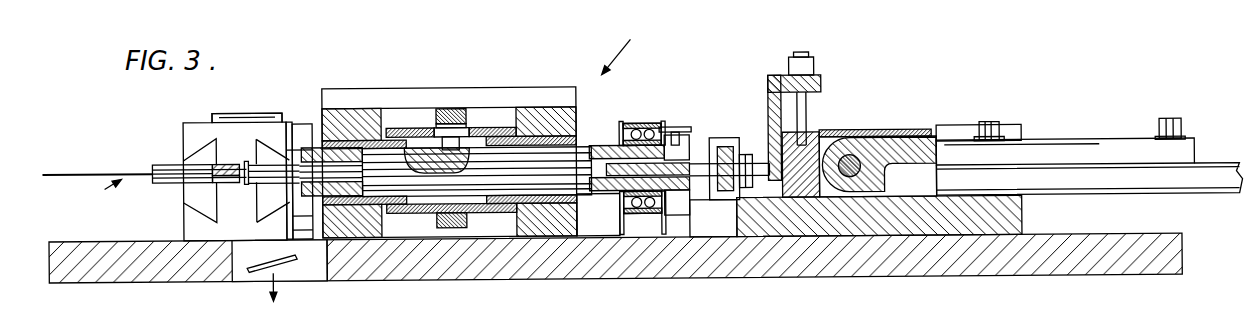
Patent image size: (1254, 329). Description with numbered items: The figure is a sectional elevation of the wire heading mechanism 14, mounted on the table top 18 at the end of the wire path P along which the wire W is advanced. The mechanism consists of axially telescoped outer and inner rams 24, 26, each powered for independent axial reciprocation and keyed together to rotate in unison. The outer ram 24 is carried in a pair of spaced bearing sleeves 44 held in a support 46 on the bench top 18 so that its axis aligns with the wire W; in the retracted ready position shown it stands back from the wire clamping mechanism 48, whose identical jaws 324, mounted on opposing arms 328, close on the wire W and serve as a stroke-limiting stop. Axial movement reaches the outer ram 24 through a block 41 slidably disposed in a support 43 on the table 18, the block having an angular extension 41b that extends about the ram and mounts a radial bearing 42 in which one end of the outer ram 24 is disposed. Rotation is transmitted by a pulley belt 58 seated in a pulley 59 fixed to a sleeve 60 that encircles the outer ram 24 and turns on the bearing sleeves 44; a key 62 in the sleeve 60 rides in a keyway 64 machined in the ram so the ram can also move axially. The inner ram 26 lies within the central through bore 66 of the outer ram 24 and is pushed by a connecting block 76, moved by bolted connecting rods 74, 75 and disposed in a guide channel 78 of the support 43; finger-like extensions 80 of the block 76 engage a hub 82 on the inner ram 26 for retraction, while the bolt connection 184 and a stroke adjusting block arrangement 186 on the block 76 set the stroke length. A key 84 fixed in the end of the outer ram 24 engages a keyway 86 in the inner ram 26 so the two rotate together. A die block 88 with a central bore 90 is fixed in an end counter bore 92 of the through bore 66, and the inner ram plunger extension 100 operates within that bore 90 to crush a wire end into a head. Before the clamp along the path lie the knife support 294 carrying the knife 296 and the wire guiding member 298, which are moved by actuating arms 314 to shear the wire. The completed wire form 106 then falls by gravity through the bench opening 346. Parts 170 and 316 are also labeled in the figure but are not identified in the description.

The wire heading mechanism 14 is at (624, 45).
The table top 18 is at (1168, 257).
The outer ram 24 is at (598, 152).
The inner ram 26 is at (698, 165).
The block 41 is at (680, 145).
The angular extension 41b is at (662, 228).
The radial bearing 42 is at (629, 231).
The support 43 is at (962, 134).
The bearing sleeves 44 is at (393, 143).
The support 46 is at (537, 99).
The wire clamping mechanism 48 is at (270, 136).
The pulley belt 58 is at (448, 115).
The pulley 59 is at (488, 131).
The sleeve 60 is at (487, 131).
The key 62 is at (448, 143).
The keyway 64 is at (428, 158).
The central through bore 66 is at (600, 182).
The connecting rod 74 is at (1185, 192).
The connecting rod 75 is at (1095, 151).
The connecting block 76 is at (900, 137).
The guide channel 78 is at (1017, 145).
The finger like extensions 80 is at (708, 145).
The hub 82 is at (725, 153).
The key 84 is at (675, 158).
The keyway 86 is at (667, 190).
The die block 88 is at (300, 189).
The central bore 90 is at (313, 169).
The end counter bore 92 is at (343, 199).
The inner ram plunger extension 100 is at (330, 169).
The wire form 106 is at (253, 274).
The collar 170 is at (293, 152).
The bolt connection 184 is at (997, 128).
The stroke adjusting block arrangement 186 is at (778, 83).
The knife support 294 is at (167, 163).
The knife 296 is at (245, 188).
The wire guiding member 298 is at (227, 168).
The actuating arms 314 is at (203, 149).
The cap plate 316 is at (238, 114).
The jaws 324 is at (260, 229).
The opposing arms 328 is at (293, 159).
The bench opening 346 is at (320, 280).
The wire W is at (97, 165).
The wire path P is at (108, 190).